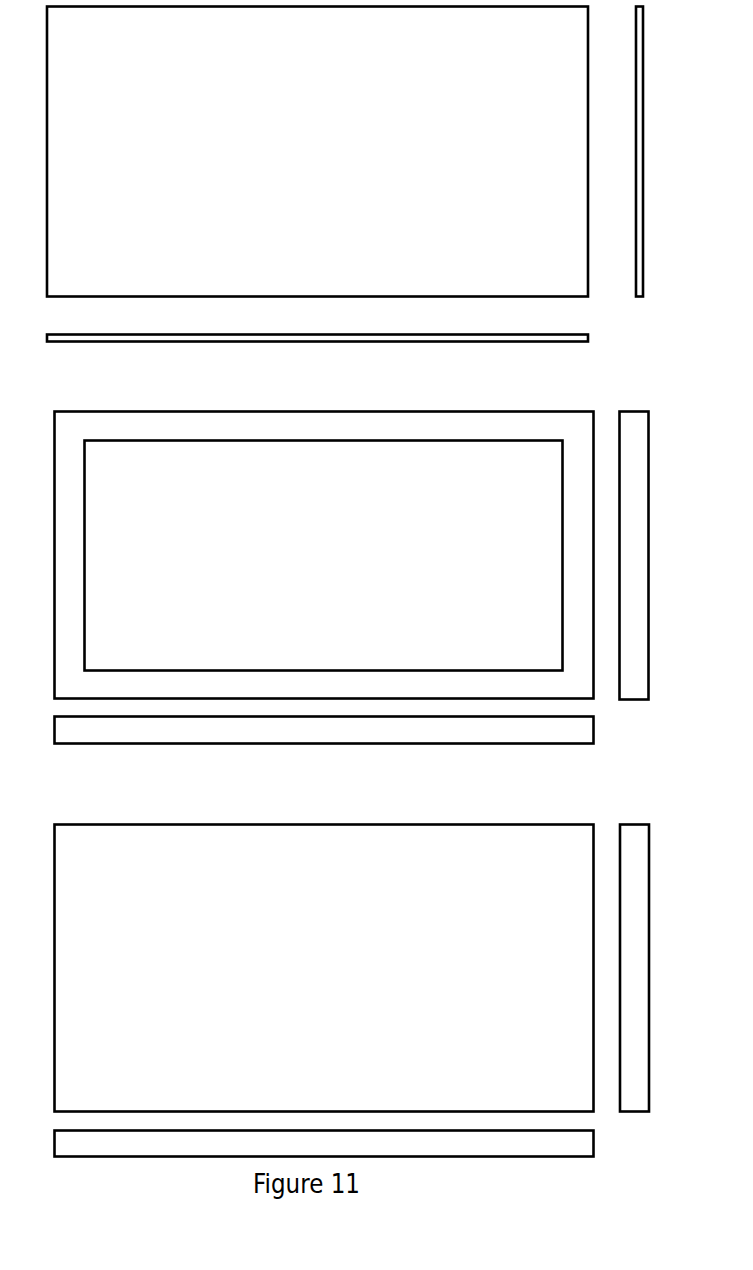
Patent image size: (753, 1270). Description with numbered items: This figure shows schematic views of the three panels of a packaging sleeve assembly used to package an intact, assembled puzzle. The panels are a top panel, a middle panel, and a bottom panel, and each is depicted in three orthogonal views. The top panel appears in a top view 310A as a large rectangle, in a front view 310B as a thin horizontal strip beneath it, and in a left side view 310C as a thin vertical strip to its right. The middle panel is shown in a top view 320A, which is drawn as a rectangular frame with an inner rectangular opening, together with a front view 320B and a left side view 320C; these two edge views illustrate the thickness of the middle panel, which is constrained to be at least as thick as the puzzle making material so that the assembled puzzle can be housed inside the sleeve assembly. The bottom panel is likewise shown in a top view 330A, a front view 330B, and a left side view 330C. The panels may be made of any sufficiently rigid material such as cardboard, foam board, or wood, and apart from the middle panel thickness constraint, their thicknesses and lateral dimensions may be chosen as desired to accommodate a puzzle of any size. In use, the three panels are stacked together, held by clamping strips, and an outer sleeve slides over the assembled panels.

The top view of top panel 310A is at (338, 164).
The front view of top panel 310B is at (363, 336).
The left side view of top panel 310C is at (639, 285).
The top view of middle panel 320A is at (420, 427).
The front view of middle panel 320B is at (357, 736).
The left side view of middle panel 320C is at (627, 683).
The top view of bottom panel 330A is at (348, 980).
The front view of bottom panel 330B is at (235, 1148).
The left side view of bottom panel 330C is at (628, 1097).